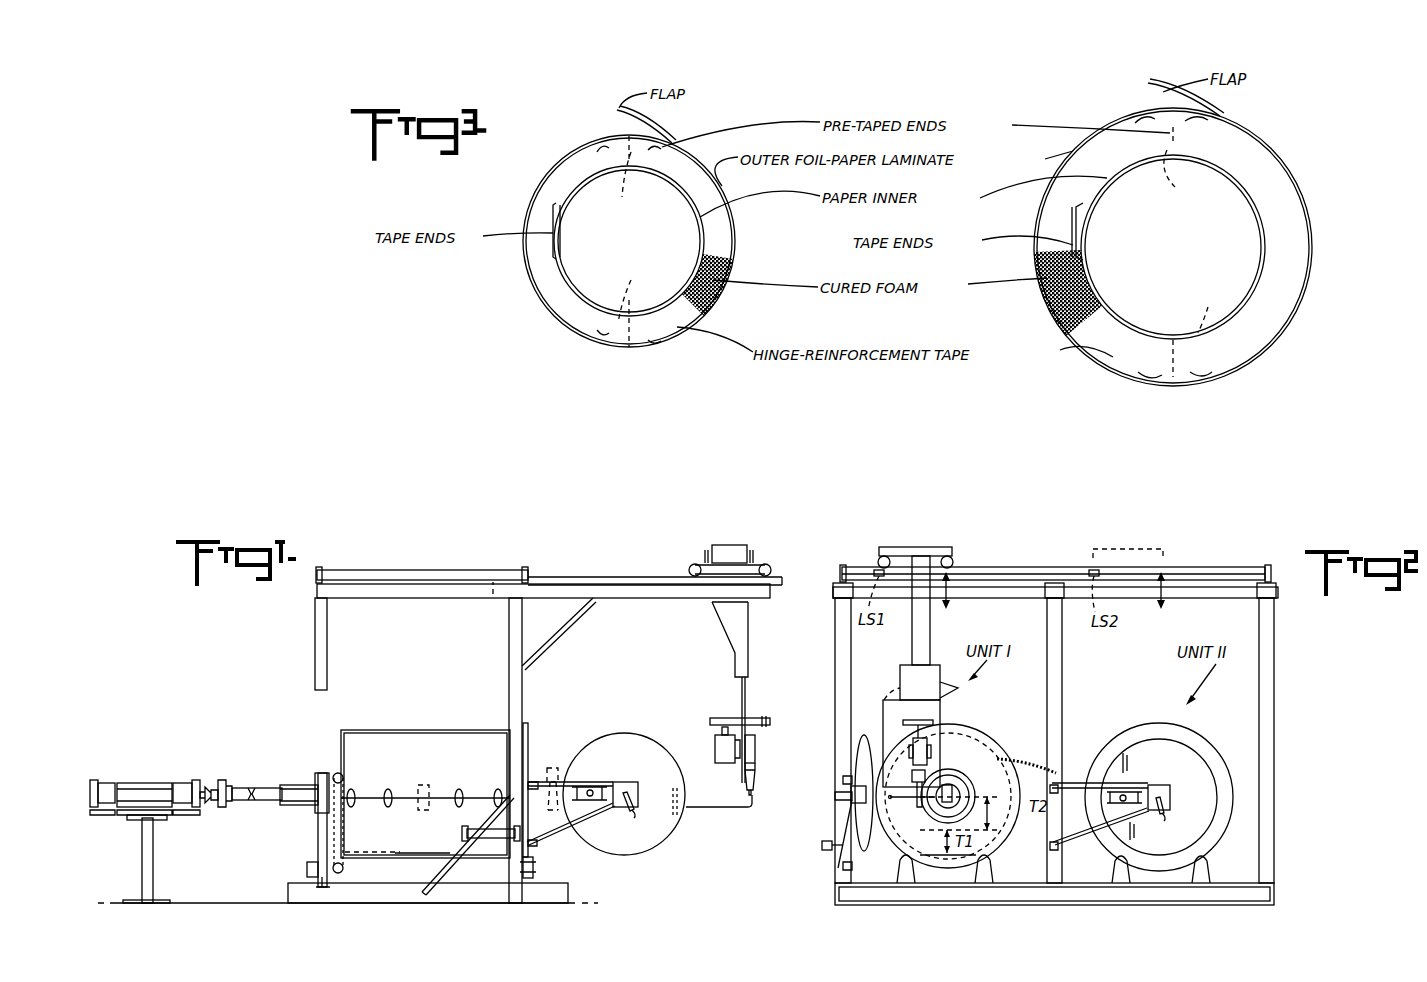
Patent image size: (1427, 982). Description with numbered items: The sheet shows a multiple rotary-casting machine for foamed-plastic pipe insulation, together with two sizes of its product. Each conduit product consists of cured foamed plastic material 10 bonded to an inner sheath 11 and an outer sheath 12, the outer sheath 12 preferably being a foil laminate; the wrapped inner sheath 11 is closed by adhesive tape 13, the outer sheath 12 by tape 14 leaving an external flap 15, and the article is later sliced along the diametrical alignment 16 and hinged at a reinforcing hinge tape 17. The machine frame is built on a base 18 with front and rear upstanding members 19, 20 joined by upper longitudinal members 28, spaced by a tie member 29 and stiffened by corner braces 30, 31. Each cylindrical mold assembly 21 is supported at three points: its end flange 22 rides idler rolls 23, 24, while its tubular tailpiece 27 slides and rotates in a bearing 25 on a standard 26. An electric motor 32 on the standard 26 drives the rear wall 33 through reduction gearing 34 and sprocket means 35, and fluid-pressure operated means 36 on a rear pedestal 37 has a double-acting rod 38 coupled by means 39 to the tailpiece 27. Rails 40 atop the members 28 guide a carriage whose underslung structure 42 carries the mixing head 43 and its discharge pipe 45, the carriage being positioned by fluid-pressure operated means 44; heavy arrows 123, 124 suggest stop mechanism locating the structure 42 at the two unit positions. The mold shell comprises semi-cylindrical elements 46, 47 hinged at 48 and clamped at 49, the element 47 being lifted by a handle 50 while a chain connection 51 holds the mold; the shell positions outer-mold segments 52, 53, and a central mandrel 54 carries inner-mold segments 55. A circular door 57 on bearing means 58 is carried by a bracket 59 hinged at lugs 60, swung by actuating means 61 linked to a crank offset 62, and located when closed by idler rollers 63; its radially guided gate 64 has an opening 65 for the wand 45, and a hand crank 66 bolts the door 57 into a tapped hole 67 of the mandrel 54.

In FIG. 3, the cured foamed plastic material 10 is at (673, 173).
In FIG. 3, the inner sheath 11 is at (700, 230).
In FIG. 3, the outer sheath 12 is at (725, 188).
In FIG. 3, the pressure-sensitive adhesive tape 13 is at (560, 207).
In FIG. 3, the tape 14 is at (603, 147).
In FIG. 3, the external flap 15 is at (617, 110).
In FIG. 3, the diametrical alignment 16 is at (911, 252).
In FIG. 3, the reinforcing hinge tape 17 is at (603, 327).
In FIG. 1, the base 18 is at (555, 890).
In FIG. 1, the front upstanding member 19 is at (509, 646).
In FIG. 2, the front upstanding member 19 is at (838, 667).
In FIG. 1, the rear upstanding member 20 is at (327, 642).
In FIG. 1, the cylindrical mold assembly 21 is at (397, 731).
In FIG. 2, the cylindrical mold assembly 21 is at (970, 726).
In FIG. 1, the end flange 22 is at (528, 728).
In FIG. 1, the idler roll 23 is at (538, 867).
In FIG. 2, the idler roll 23 is at (903, 878).
In FIG. 2, the idler roll 24 is at (983, 878).
In FIG. 1, the bearing 25 is at (291, 785).
In FIG. 1, the standard 26 is at (318, 822).
In FIG. 1, the tubular tailpiece 27 is at (254, 788).
In FIG. 1, the upper longitudinal member 28 is at (622, 599).
In FIG. 1, the tie member 29 is at (493, 594).
In FIG. 1, the corner brace 30 is at (552, 634).
In FIG. 1, the corner brace 31 is at (458, 850).
In FIG. 1, the electric motor 32 is at (310, 862).
In FIG. 1, the rear wall 33 is at (348, 848).
In FIG. 1, the reduction gearing 34 is at (324, 887).
In FIG. 1, the sprocket means 35 is at (345, 825).
In FIG. 1, the fluid-pressure operated means 36 is at (172, 781).
In FIG. 1, the rear pedestal 37 is at (142, 846).
In FIG. 1, the double-acting rod 38 is at (210, 787).
In FIG. 1, the coupling means 39 is at (224, 780).
In FIG. 1, the longitudinal rail 40 is at (600, 577).
In FIG. 1, the underslung structure 42 is at (727, 544).
In FIG. 2, the underslung structure 42 is at (913, 547).
In FIG. 1, the head 43 is at (758, 762).
In FIG. 2, the head 43 is at (905, 765).
In FIG. 1, the fluid-pressure operated means 44 is at (421, 570).
In FIG. 1, the discharge pipe 45 is at (690, 810).
In FIG. 2, the discharge pipe 45 is at (910, 800).
In FIG. 1, the semi-cylindrical segmental shell element 46 is at (428, 831).
In FIG. 2, the semi-cylindrical segmental shell element 46 is at (945, 865).
In FIG. 1, the semi-cylindrical segmental shell element 47 is at (425, 762).
In FIG. 1, the hinge 48 is at (387, 789).
In FIG. 1, the clamp means 49 is at (426, 785).
In FIG. 2, the handle 50 is at (955, 686).
In FIG. 2, the removable chain connection 51 is at (1002, 758).
In FIG. 2, the outer-mold segment 52 is at (937, 812).
In FIG. 2, the outer-mold segment 53 is at (892, 710).
In FIG. 2, the central mandrel 54 is at (958, 788).
In FIG. 2, the inner-mold segment 55 is at (948, 779).
In FIG. 1, the circular door 57 is at (624, 740).
In FIG. 2, the circular door 57 is at (857, 748).
In FIG. 1, the bearing means 58 is at (634, 787).
In FIG. 2, the bearing means 58 is at (855, 803).
In FIG. 1, the bracket 59 is at (556, 782).
In FIG. 2, the bracket 59 is at (845, 815).
In FIG. 1, the hinge lugs 60 is at (535, 782).
In FIG. 2, the hinge lugs 60 is at (843, 780).
In FIG. 1, the pressure-fluid actuating means 61 is at (482, 829).
In FIG. 2, the crank offset 62 is at (822, 846).
In FIG. 2, the idler rollers 63 is at (1005, 750).
In FIG. 1, the radially guided gate 64 is at (578, 787).
In FIG. 2, the radially guided gate 64 is at (1124, 796).
In FIG. 1, the opening 65 is at (592, 790).
In FIG. 2, the opening 65 is at (1123, 798).
In FIG. 1, the hand crank 66 is at (635, 815).
In FIG. 2, the hand crank 66 is at (835, 796).
In FIG. 2, the tapped hole 67 is at (954, 790).
In FIG. 2, the heavy arrow 123 is at (952, 600).
In FIG. 2, the heavy arrow 124 is at (1166, 600).